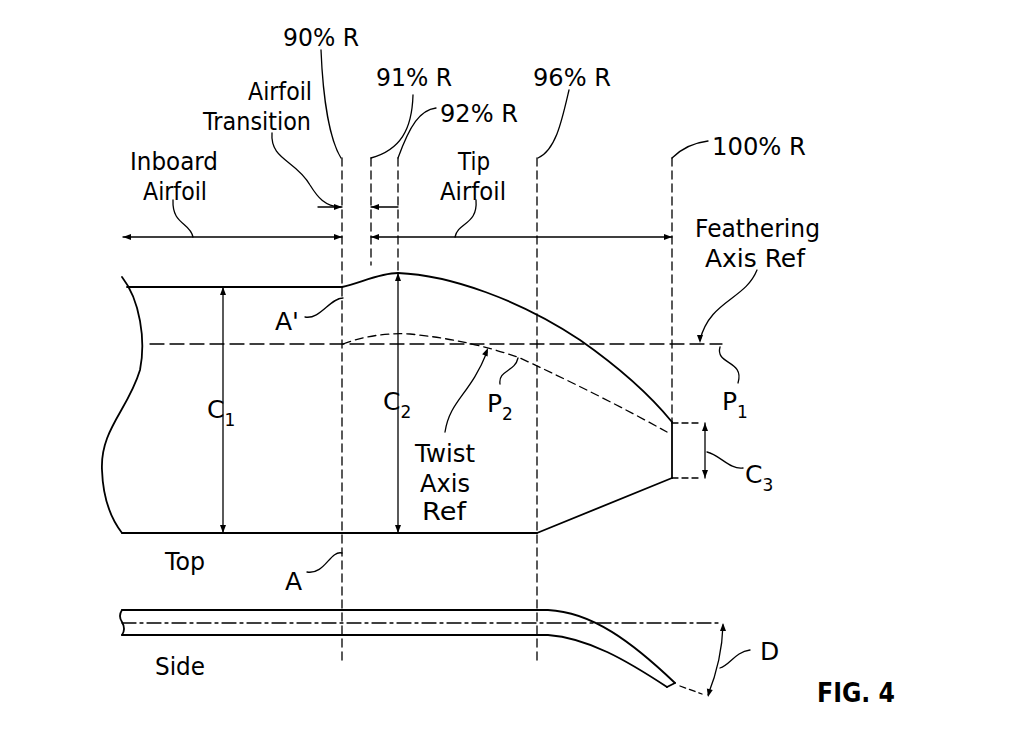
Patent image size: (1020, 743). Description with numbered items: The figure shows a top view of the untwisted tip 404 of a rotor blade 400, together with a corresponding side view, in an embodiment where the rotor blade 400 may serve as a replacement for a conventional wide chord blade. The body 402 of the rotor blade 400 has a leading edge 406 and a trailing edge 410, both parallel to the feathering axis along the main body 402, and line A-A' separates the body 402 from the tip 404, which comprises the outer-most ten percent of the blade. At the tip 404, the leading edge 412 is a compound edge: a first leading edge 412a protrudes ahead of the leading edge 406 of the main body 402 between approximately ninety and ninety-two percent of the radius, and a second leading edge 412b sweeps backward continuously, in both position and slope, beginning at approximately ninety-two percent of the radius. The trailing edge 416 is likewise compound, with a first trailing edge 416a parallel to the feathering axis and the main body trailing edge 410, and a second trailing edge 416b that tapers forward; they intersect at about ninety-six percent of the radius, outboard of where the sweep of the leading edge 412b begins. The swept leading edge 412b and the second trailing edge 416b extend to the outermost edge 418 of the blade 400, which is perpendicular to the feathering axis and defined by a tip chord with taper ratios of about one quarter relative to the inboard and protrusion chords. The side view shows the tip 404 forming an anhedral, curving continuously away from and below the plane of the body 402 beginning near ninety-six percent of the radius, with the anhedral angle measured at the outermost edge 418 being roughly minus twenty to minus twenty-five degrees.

The rotor blade 400 is at (624, 168).
The body 402 is at (153, 418).
The tip 404 is at (598, 480).
The leading edge 406 is at (153, 290).
The trailing edge 410 is at (148, 533).
The leading edge 412 is at (580, 338).
The first leading edge 412a is at (375, 278).
The second leading edge 412b is at (552, 322).
The trailing edge 416 is at (660, 485).
The first trailing edge 416a is at (433, 535).
The second trailing edge 416b is at (555, 528).
The outermost edge 418 is at (671, 450).